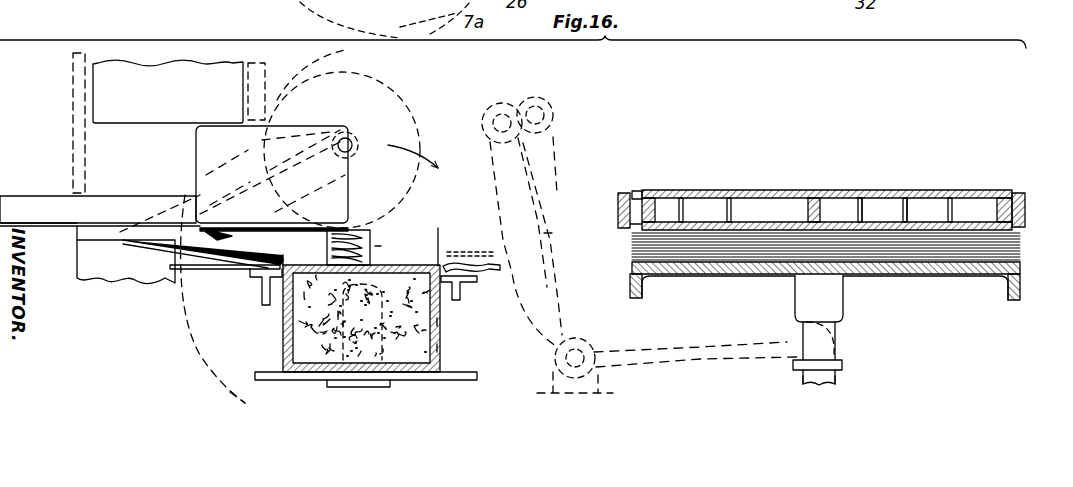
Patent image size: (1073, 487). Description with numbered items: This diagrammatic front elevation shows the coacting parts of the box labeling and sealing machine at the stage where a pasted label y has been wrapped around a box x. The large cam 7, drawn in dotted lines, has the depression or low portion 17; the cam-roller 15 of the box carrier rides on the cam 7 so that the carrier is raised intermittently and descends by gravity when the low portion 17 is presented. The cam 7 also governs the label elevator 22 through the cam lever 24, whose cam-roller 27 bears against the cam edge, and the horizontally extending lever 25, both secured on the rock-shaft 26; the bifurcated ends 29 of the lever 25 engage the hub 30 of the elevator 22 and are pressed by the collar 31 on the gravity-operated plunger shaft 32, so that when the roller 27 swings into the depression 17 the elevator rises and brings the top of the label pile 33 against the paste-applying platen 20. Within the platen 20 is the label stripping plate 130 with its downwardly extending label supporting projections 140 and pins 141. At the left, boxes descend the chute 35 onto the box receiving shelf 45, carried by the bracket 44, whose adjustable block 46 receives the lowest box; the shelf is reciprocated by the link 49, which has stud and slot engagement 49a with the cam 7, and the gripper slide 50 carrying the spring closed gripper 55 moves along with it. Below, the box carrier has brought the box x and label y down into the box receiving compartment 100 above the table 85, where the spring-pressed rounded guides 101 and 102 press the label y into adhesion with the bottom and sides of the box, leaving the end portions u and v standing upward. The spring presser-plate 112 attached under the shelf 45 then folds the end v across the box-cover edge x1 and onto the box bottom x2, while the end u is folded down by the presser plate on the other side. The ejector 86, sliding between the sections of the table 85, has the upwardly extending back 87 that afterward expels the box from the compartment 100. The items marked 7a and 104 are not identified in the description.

The cam 7 is at (200, 362).
The disc hub 7a is at (184, 318).
The cam-roller 15 is at (384, 66).
The depression of the cam 17 is at (424, 215).
The paste-applying platen 20 is at (681, 222).
The label elevator 22 is at (744, 268).
The cam lever 24 is at (532, 226).
The horizontally extending lever 25 is at (710, 338).
The rock-shaft 26 is at (580, 344).
The cam-roller 27 is at (500, 108).
The bifurcated ends 29 is at (800, 332).
The hub of the elevator 30 is at (819, 330).
The collar 31 is at (845, 363).
The elevator plunger shaft 32 is at (841, 377).
The pile of labels 33 is at (938, 264).
The chute 35 is at (258, 74).
The bracket 44 is at (100, 253).
The box receiving shelf 45 is at (250, 229).
The block 46 is at (156, 189).
The link 49 is at (234, 179).
The stud and slot engagement 49a is at (342, 132).
The gripper slide 50 is at (336, 236).
The spring closed gripper 55 is at (366, 236).
The table 85 is at (458, 379).
The ejector 86 is at (368, 381).
The back of the ejector 87 is at (441, 322).
The box receiving compartment 100 is at (300, 325).
The rounded pressure guide 101 is at (273, 245).
The rounded pressure guide 102 is at (478, 292).
The curved plate 104 is at (500, 268).
The spring presser-plate 112 is at (218, 250).
The label stripping plate 130 is at (870, 210).
The label supporting projections 140 is at (1004, 194).
The pins 141 is at (958, 180).
The label end portion u is at (441, 233).
The label end portion v is at (298, 247).
The box x is at (171, 105).
The box cover edge x1 is at (416, 242).
The box bottom x2 is at (392, 233).
The pasted label y is at (441, 348).